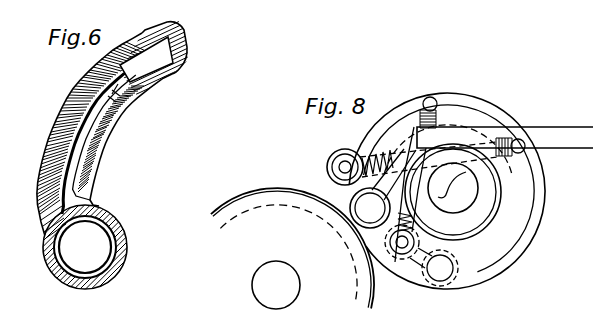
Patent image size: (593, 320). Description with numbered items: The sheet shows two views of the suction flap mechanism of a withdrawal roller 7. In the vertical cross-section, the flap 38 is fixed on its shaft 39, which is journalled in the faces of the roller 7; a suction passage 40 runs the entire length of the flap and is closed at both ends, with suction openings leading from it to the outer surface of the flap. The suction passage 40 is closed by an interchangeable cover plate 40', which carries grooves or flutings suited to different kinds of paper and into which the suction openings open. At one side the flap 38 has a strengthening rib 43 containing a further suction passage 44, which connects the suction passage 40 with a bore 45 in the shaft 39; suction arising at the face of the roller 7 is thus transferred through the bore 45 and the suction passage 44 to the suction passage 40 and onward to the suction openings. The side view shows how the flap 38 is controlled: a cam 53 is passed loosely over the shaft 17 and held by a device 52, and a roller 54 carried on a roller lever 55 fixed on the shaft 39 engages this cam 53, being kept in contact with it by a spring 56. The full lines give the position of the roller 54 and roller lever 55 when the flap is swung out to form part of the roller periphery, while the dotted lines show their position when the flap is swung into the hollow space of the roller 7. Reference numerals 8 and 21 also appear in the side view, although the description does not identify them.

In FIG. 8, the roller 7 is at (528, 248).
In FIG. 8, the wheel rim 8 is at (235, 202).
In FIG. 8, the shaft 17 is at (466, 197).
In FIG. 8, the wheel flange 21 is at (285, 191).
In FIG. 6, the flap 38 is at (86, 93).
In FIG. 6, the shaft 39 is at (127, 226).
In FIG. 6, the suction passage 40 is at (163, 66).
In FIG. 6, the cover plate 40' is at (166, 44).
In FIG. 6, the strengthening rib 43 is at (110, 128).
In FIG. 6, the suction passage 44 is at (92, 154).
In FIG. 6, the bore 45 is at (98, 254).
In FIG. 8, the device 52 is at (482, 189).
In FIG. 8, the cam 53 is at (458, 110).
In FIG. 8, the roller 54 is at (343, 150).
In FIG. 8, the roller lever 55 is at (352, 193).
In FIG. 8, the spring 56 is at (437, 106).